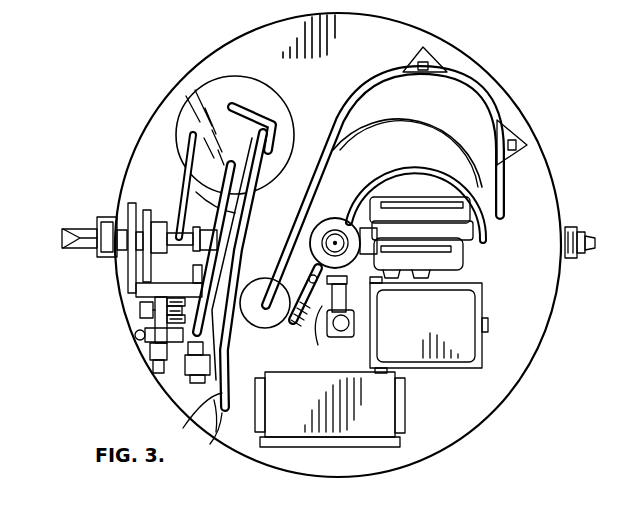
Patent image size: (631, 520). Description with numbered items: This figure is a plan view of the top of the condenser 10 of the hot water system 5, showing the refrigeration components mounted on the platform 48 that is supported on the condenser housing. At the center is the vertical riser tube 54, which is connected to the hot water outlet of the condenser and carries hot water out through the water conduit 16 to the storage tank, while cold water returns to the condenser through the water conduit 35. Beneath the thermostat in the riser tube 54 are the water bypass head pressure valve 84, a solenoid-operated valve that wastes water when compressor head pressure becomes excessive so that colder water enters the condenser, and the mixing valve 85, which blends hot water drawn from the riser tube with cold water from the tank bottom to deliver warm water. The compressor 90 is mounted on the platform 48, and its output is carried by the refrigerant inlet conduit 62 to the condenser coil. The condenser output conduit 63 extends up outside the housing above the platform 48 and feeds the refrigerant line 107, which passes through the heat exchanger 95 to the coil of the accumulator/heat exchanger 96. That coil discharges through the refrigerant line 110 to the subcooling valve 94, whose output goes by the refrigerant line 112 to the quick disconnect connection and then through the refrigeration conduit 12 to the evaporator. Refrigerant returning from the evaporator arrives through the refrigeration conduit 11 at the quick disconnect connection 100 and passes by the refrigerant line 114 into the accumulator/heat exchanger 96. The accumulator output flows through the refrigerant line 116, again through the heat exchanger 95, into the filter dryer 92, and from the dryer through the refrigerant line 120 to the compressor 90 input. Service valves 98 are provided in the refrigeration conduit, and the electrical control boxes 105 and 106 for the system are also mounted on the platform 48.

The condenser 10 is at (532, 76).
The refrigeration conduit 11 is at (91, 214).
The refrigeration conduit 12 is at (70, 250).
The water conduit 16 is at (337, 202).
The water conduit 35 is at (590, 257).
The platform 48 is at (527, 362).
The vertical riser tube 54 is at (320, 222).
The refrigerant inlet 62 is at (397, 163).
The conduit 63 is at (220, 432).
The water bypass head pressure valve 84 is at (319, 340).
The mixing valve 85 is at (307, 336).
The compressor 90 is at (430, 142).
The filter dryer 92 is at (265, 329).
The subcooling valve 94 is at (203, 200).
The heat exchanger 95 is at (258, 226).
The accumulator/heat exchanger 96 is at (187, 98).
The service valves 98 is at (163, 378).
The quick disconnect connection 100 is at (110, 260).
The electrical control box 105 is at (290, 440).
The electrical control box 106 is at (457, 370).
The refrigerant line 107 is at (192, 418).
The refrigerant line 110 is at (231, 160).
The refrigerant line 112 is at (165, 250).
The refrigerant line 114 is at (190, 147).
The refrigerant line 116 is at (297, 132).
The refrigerant line 120 is at (340, 120).
The hot water system 5 is at (48, 230).